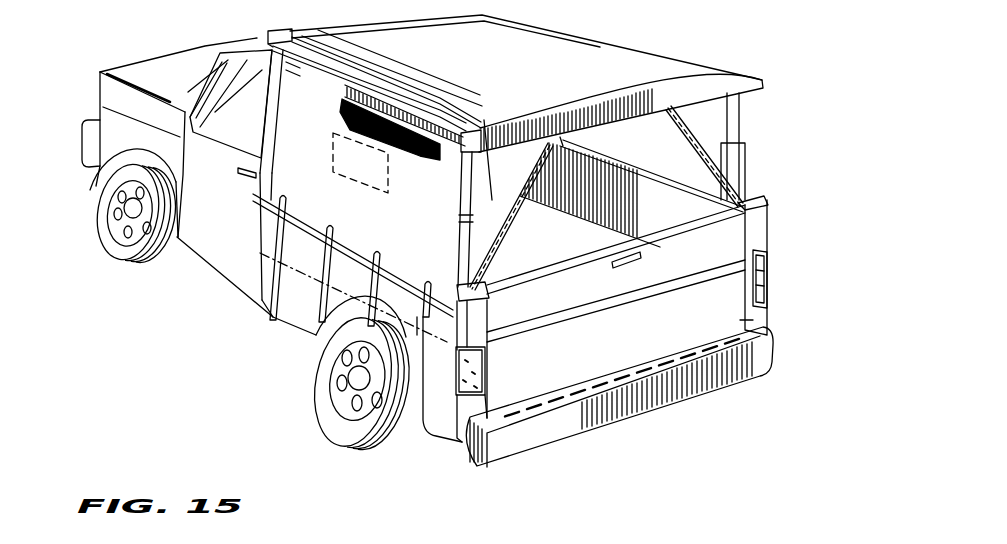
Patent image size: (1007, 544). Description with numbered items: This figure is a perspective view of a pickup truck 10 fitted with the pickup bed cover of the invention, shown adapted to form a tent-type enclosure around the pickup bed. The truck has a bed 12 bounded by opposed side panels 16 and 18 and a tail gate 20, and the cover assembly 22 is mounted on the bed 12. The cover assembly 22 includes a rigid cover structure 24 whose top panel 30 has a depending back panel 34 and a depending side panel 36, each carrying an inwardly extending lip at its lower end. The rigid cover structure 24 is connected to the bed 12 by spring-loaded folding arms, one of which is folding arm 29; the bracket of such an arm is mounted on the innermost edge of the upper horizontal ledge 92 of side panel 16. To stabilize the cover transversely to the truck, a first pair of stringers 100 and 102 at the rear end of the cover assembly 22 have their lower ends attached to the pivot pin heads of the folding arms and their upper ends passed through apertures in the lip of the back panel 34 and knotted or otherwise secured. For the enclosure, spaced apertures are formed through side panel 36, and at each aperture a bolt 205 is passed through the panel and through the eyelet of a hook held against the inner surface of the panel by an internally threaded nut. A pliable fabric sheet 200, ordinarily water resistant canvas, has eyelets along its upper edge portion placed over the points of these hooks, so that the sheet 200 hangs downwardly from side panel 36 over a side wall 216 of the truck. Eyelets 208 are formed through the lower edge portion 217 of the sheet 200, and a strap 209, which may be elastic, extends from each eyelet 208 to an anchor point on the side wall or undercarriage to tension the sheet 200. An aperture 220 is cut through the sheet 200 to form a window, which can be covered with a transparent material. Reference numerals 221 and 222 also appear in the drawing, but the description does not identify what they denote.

The pickup truck 10 is at (228, 301).
The bed 12 is at (776, 221).
The side panel 16 is at (305, 337).
The side panel 18 is at (633, 196).
The tail gate 20 is at (768, 296).
The cover assembly 22 is at (777, 188).
The rigid cover structure 24 is at (730, 53).
The folding arm 29 is at (746, 158).
The top panel 30 is at (690, 60).
The back panel 34 is at (758, 88).
The side panel 36 is at (231, 104).
The upper horizontal ledge 92 is at (655, 172).
The stringer 100 is at (497, 243).
The stringer 102 is at (697, 152).
The pliable fabric sheet 200 is at (368, 108).
The bolt 205 is at (340, 100).
The eyelets 208 is at (283, 196).
The strap 209 is at (262, 322).
The side wall 216 is at (258, 232).
The lower edge portion 217 is at (358, 240).
The aperture 220 is at (333, 145).
The front support post 221 is at (462, 232).
The shaded panel 222 is at (338, 92).